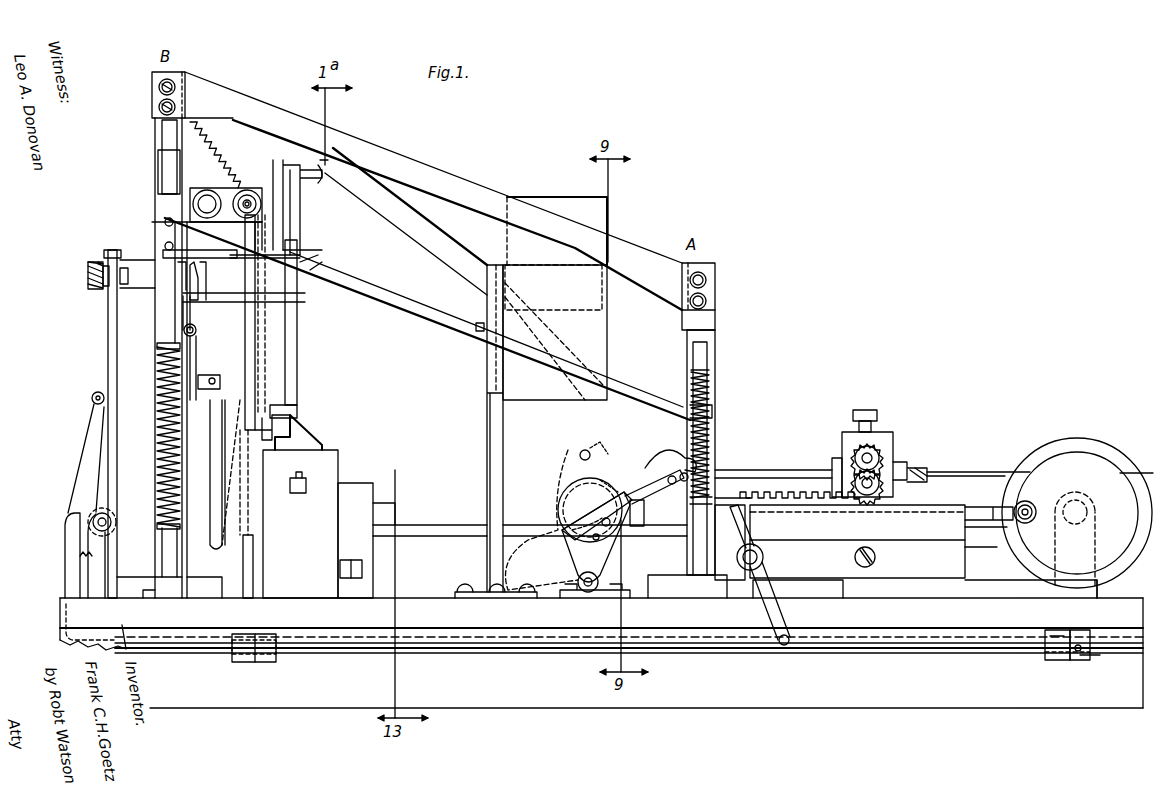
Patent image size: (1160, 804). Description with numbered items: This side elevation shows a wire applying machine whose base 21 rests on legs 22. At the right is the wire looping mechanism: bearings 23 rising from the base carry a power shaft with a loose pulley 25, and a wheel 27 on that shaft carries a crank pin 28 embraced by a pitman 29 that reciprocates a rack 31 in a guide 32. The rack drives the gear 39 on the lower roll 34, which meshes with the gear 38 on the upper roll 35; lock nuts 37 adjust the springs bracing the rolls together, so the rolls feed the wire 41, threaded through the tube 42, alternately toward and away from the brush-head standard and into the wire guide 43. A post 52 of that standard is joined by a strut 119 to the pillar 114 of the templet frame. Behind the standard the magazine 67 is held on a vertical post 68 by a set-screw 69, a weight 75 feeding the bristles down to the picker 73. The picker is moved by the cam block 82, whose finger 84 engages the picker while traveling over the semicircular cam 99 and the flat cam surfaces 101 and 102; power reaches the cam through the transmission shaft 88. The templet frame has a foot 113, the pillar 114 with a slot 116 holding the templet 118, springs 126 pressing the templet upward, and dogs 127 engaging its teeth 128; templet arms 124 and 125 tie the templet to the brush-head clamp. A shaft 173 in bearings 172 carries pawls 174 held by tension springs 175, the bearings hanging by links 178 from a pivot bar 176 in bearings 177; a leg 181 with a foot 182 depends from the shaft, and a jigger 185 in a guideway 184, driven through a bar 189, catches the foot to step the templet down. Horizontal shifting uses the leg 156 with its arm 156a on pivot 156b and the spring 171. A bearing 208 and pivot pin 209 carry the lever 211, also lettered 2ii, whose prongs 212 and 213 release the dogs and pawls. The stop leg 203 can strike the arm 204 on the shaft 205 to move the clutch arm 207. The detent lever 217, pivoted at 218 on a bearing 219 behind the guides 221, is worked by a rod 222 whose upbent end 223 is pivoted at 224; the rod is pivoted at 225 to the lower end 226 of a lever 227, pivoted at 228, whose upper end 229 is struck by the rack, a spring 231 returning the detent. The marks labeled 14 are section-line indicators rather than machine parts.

The adjusting knob / section line 14 is at (88, 271).
The base 21 is at (180, 618).
The legs 22 is at (116, 648).
The bearings 23 is at (1057, 535).
The loose pulley 25 is at (1088, 452).
The wheel 27 is at (1112, 550).
The crank pin 28 is at (1030, 508).
The pitman 29 is at (980, 505).
The rack 31 is at (810, 497).
The guide 32 is at (918, 515).
The lower roll 34 is at (880, 484).
The upper roll 35 is at (880, 458).
The lock nuts 37 is at (870, 416).
The gear 38 is at (872, 448).
The gear 39 is at (850, 468).
The wire 41 is at (962, 470).
The tube 42 is at (920, 468).
The wire guide 43 is at (752, 470).
The post 52 is at (690, 561).
The magazine 67 is at (600, 334).
The vertical post 68 is at (486, 455).
The set-screw 69 is at (477, 322).
The picker 73 is at (652, 480).
The weight 75 is at (604, 230).
The cam block 82 is at (560, 512).
The finger 84 is at (608, 488).
The transmission shaft 88 is at (408, 525).
The semi-circular cam 99 is at (612, 540).
The cam surface 101 is at (582, 500).
The cam surface 102 is at (636, 514).
The foot 113 is at (148, 592).
The pillar 114 is at (160, 554).
The slot 116 is at (157, 382).
The templet 118 is at (164, 172).
The strut 119 is at (455, 190).
The templet arm 124 is at (388, 300).
The templet arm 125 is at (412, 238).
The springs 126 is at (157, 452).
The dogs 127 is at (190, 292).
The teeth 128 is at (186, 272).
The leg 156 is at (320, 180).
The arm 156a is at (306, 122).
The pivot 156b is at (324, 168).
The spring 171 is at (322, 282).
The bearings 172 is at (246, 196).
The shaft 173 is at (250, 196).
The pawl 174 is at (192, 275).
The tension spring 175 is at (216, 160).
The pivot bar 176 is at (232, 204).
The bearings 177 is at (192, 206).
The links 178 is at (230, 216).
The leg 181 is at (248, 376).
The foot 182 is at (274, 426).
The guideway 184 is at (338, 540).
The jigger 185 is at (312, 448).
The bar 189 is at (304, 475).
The long leg 203 is at (214, 544).
The arm 204 is at (252, 568).
The shaft 205 is at (332, 648).
The clutch arm 207 is at (1078, 656).
The bearing 208 is at (195, 345).
The pivot pin 209 is at (197, 332).
The lever 2ii is at (198, 360).
The lever 211 is at (137, 274).
The outer prong 212 is at (183, 300).
The inner prong 213 is at (208, 285).
The detent lever 217 is at (110, 336).
The pivot 218 is at (92, 520).
The bearing 219 is at (98, 576).
The guides 221 is at (126, 590).
The rod 222 is at (475, 645).
The upbent end 223 is at (82, 456).
The pivot 224 is at (92, 396).
The pivot 225 is at (786, 645).
The lower end 226 is at (774, 590).
The lever 227 is at (762, 556).
The pivot 228 is at (757, 548).
The upper end 229 is at (738, 498).
The spring 231 is at (78, 556).